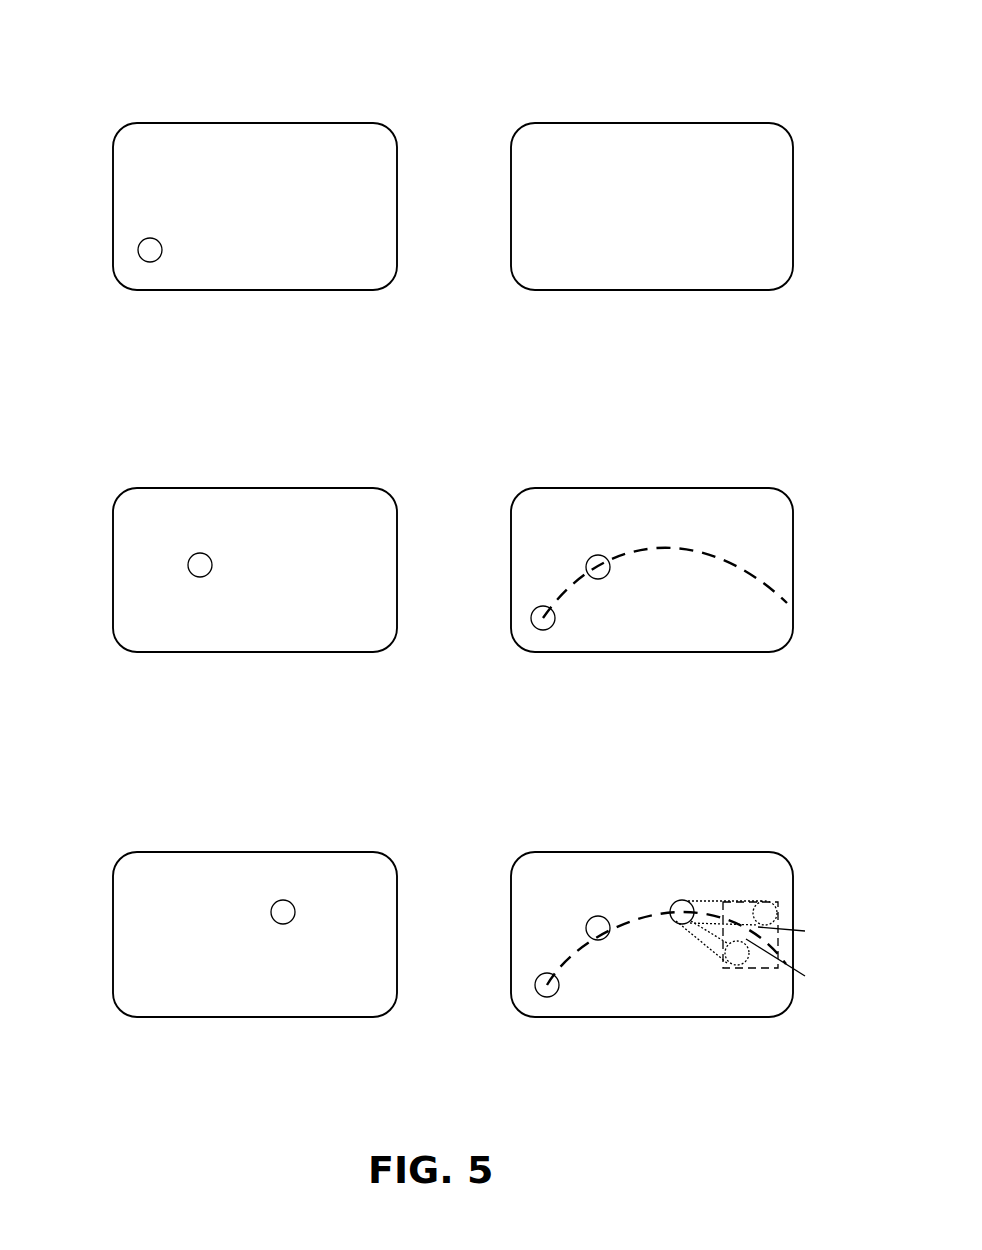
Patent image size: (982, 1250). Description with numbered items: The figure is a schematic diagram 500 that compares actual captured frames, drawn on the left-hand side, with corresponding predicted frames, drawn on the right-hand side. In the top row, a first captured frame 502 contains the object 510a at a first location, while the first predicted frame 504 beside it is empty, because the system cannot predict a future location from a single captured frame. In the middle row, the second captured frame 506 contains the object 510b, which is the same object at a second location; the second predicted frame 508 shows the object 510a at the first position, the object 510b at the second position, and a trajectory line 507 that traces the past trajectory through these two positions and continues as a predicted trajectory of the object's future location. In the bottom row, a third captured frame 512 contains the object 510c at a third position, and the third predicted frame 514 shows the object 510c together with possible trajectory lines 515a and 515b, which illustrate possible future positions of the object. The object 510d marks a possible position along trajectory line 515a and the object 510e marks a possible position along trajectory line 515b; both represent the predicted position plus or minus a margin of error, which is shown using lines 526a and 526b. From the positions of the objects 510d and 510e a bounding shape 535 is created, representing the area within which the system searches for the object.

The schematic diagram 500 is at (68, 29).
The first captured frame 502 is at (297, 123).
The first predicted frame 504 is at (685, 123).
The second captured frame 506 is at (298, 488).
The trajectory line 507 is at (690, 548).
The second predicted frame 508 is at (703, 488).
The object 510a is at (162, 250).
The object 510b is at (212, 565).
The object 510c is at (295, 914).
The object 510d is at (770, 904).
The object 510e is at (729, 962).
The third captured frame 512 is at (308, 852).
The third predicted frame 514 is at (710, 852).
The possible trajectory line 515a is at (705, 902).
The possible trajectory line 515b is at (708, 935).
The line 526a is at (809, 931).
The line 526b is at (803, 962).
The bounding shape 535 is at (760, 970).